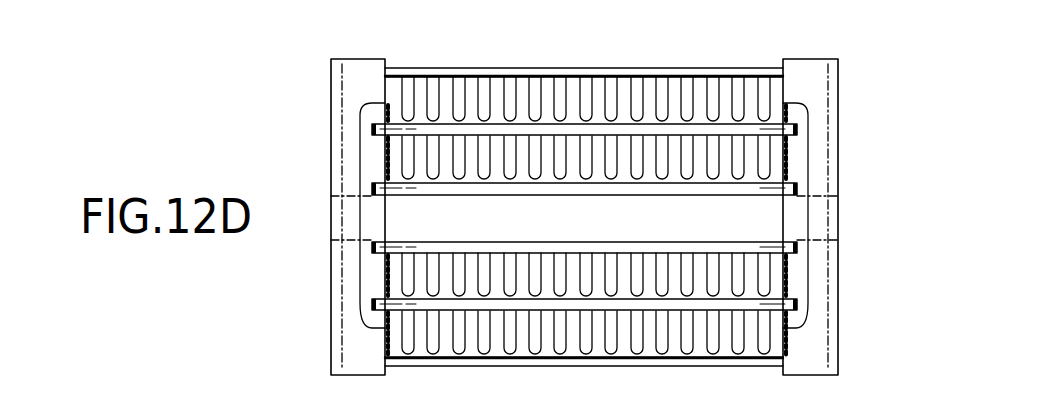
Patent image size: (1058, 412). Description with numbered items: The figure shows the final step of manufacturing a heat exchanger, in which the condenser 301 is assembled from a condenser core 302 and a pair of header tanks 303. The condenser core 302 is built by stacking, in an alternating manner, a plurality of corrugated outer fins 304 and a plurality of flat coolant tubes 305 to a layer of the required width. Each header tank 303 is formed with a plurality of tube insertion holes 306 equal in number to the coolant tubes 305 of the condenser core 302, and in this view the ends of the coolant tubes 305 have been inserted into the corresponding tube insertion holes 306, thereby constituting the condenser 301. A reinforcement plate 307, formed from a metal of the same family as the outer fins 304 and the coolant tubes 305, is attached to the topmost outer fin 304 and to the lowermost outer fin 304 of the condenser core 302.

The condenser 301 is at (304, 44).
The condenser core 302 is at (714, 54).
The header tank 303 is at (357, 58).
The corrugated outer fin 304 is at (527, 290).
The flat coolant tube 305 is at (437, 280).
The tube insertion hole 306 is at (797, 130).
The reinforcement plate 307 is at (436, 67).